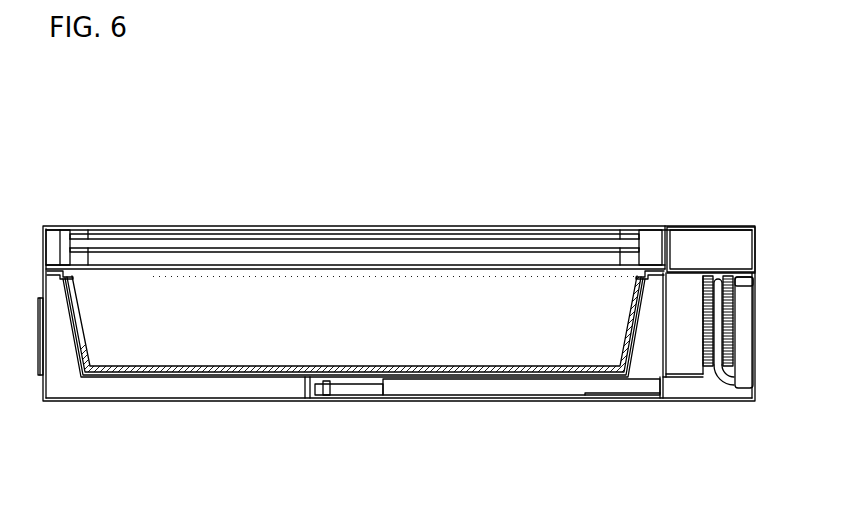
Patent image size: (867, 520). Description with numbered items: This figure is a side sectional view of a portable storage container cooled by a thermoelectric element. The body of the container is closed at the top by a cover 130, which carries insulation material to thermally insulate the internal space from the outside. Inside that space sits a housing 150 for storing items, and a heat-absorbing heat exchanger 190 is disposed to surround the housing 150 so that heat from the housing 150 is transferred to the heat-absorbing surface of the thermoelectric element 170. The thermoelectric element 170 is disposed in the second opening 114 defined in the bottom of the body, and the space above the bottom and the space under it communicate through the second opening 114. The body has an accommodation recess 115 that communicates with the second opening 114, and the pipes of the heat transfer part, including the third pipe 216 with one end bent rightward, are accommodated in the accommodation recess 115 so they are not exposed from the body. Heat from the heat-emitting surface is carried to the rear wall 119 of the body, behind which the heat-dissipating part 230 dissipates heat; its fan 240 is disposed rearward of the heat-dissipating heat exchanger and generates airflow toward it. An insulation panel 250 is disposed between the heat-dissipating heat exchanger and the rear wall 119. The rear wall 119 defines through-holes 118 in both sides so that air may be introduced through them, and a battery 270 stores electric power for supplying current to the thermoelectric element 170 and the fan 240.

The cover 130 is at (115, 245).
The rear wall 119 is at (692, 247).
The fan 240 is at (745, 283).
The heat-absorbing heat exchanger 190 is at (108, 369).
The housing 150 is at (162, 366).
The second opening 114 is at (328, 382).
The thermoelectric element 170 is at (372, 387).
The accommodation recess 115 is at (485, 380).
The third pipe 216 is at (609, 385).
The insulation panel 250 is at (663, 376).
The battery 270 is at (683, 372).
The heat-dissipating part 230 is at (730, 368).
The through-holes 118 is at (733, 383).